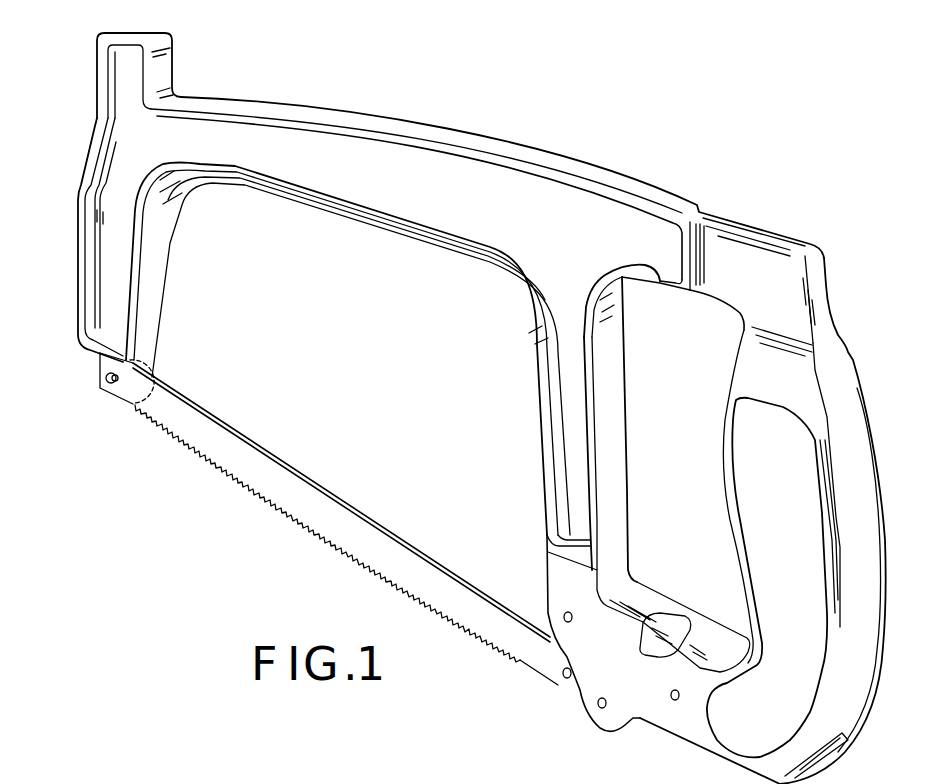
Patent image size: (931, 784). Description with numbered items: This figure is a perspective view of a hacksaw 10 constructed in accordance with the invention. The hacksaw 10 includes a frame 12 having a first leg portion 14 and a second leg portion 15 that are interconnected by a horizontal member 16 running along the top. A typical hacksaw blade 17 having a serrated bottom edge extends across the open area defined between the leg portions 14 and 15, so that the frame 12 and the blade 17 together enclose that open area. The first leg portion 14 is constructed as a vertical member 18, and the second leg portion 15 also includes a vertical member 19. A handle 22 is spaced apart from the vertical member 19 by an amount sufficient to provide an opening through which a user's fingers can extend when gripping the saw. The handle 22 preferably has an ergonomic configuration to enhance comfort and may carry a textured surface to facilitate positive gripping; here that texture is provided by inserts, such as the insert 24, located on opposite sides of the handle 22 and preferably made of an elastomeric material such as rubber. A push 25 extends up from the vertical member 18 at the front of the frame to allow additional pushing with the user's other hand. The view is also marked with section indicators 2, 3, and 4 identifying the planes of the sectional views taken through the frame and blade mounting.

The hacksaw 10 is at (548, 64).
The frame 12 is at (291, 97).
The first leg portion 14 is at (67, 209).
The second leg portion 15 is at (721, 178).
The horizontal member 16 is at (448, 180).
The hacksaw blade 17 is at (352, 535).
The vertical member 18 is at (110, 270).
The vertical member 19 is at (567, 368).
The handle 22 is at (750, 367).
The insert 24 is at (753, 457).
The push 25 is at (166, 61).
The section line 2- 2 is at (205, 378).
The section line 3- 3 is at (90, 363).
The section line 4- 4 is at (503, 535).